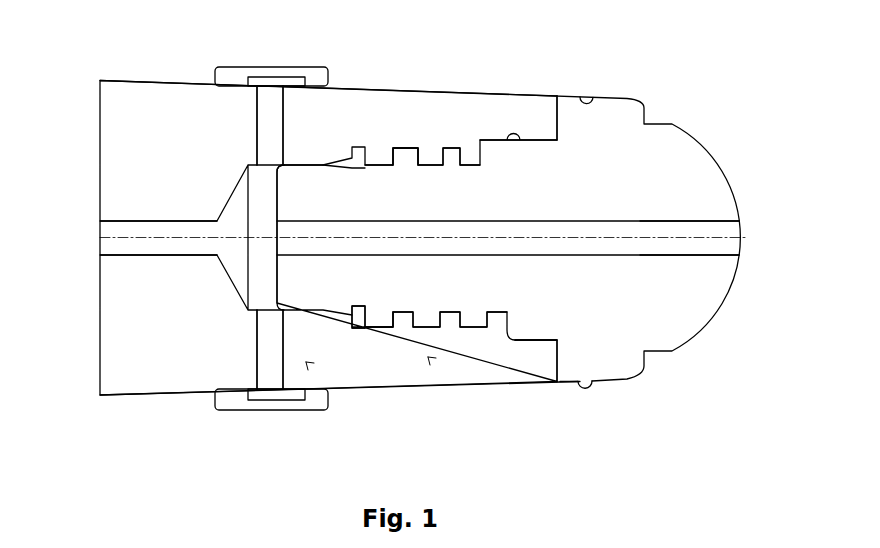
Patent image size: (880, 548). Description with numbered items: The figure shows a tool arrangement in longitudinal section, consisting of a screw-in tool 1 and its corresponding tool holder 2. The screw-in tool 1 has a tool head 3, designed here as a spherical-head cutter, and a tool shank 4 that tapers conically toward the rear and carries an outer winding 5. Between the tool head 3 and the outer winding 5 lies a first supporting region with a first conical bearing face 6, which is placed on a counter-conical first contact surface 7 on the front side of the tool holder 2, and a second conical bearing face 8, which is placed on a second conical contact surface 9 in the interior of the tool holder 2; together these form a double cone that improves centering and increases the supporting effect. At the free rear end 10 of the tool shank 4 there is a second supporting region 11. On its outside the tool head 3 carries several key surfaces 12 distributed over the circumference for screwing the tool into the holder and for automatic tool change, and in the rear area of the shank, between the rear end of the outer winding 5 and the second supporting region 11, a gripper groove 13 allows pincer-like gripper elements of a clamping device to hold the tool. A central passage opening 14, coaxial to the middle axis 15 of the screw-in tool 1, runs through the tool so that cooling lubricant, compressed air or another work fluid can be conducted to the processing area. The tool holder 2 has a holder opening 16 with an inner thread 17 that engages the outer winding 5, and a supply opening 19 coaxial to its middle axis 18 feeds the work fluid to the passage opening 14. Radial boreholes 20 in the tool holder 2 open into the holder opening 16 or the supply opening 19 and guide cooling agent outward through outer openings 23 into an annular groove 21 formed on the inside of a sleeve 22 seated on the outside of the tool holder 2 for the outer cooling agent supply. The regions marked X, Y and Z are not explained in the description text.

The screw-in tool 1 is at (734, 129).
The tool holder 2 is at (147, 420).
The tool head 3 is at (653, 297).
The tool shank 4 is at (443, 177).
The outer winding 5 is at (403, 148).
The first conical bearing face 6 is at (554, 344).
The first contact surface 7 is at (558, 115).
The second conical bearing face 8 is at (530, 137).
The second conical contact surface 9 is at (530, 338).
The free rear end 10 is at (272, 208).
The second supporting region 11 is at (308, 167).
The key surfaces 12 is at (590, 97).
The gripper groove 13 is at (348, 325).
The central passage opening 14 is at (713, 245).
The middle axis 15 is at (698, 232).
The holder opening 16 is at (258, 290).
The inner thread 17 is at (395, 325).
The middle axis 18 is at (127, 238).
The supply opening 19 is at (113, 243).
The radial boreholes 20 is at (270, 152).
The annular groove 21 is at (287, 80).
The sleeve 22 is at (236, 72).
The outer openings 23 is at (272, 78).
The zone X is at (430, 359).
The zone Y is at (570, 383).
The zone Z is at (297, 412).